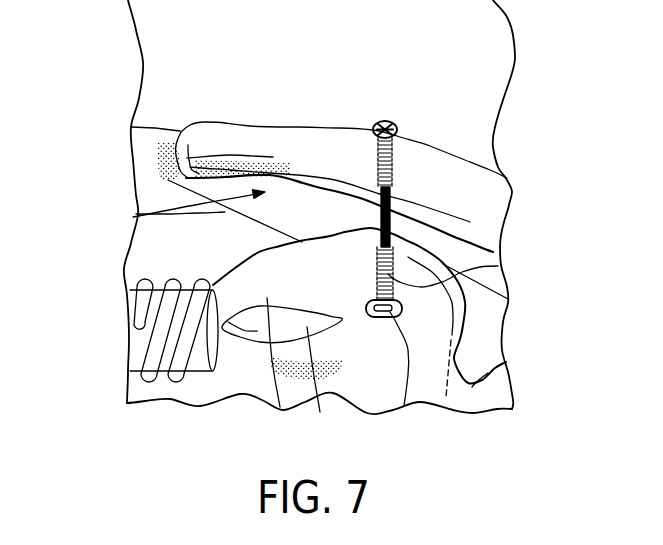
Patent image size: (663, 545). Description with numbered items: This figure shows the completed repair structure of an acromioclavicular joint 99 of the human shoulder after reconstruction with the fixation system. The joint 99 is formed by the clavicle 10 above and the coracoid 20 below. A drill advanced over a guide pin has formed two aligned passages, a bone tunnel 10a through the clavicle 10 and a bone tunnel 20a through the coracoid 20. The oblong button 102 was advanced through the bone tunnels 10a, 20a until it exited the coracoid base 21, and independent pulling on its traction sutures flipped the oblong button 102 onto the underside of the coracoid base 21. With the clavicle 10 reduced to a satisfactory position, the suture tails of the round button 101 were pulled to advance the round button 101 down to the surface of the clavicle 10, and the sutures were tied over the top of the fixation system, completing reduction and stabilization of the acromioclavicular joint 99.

The clavicle 10 is at (490, 220).
The bone tunnel 10a is at (393, 163).
The coracoid 20 is at (280, 407).
The bone tunnel 20a is at (498, 266).
The coracoid base 21 is at (320, 412).
The acromioclavicular joint 99 is at (133, 217).
The round button 101 is at (392, 122).
The oblong button 102 is at (404, 405).